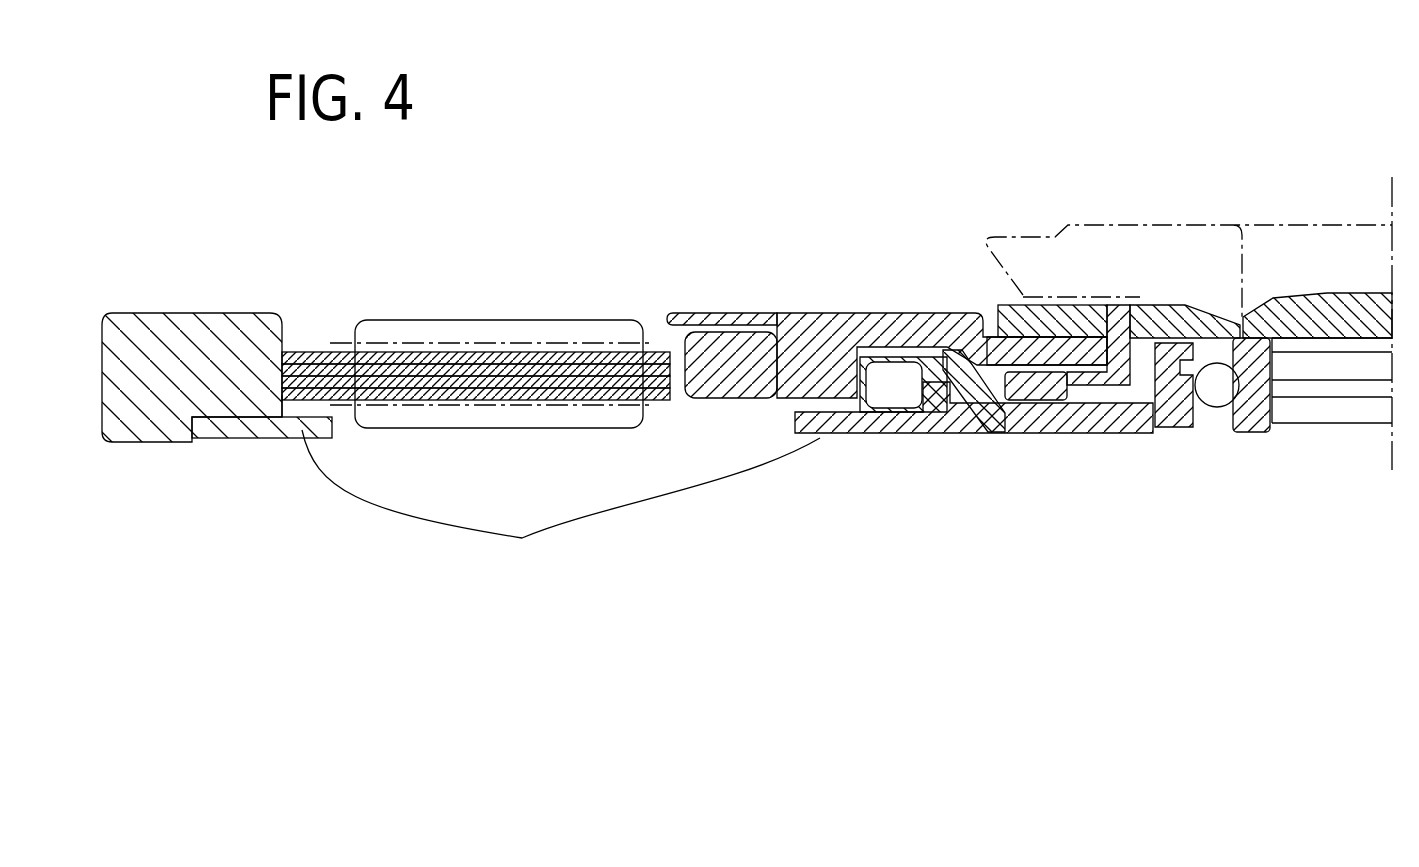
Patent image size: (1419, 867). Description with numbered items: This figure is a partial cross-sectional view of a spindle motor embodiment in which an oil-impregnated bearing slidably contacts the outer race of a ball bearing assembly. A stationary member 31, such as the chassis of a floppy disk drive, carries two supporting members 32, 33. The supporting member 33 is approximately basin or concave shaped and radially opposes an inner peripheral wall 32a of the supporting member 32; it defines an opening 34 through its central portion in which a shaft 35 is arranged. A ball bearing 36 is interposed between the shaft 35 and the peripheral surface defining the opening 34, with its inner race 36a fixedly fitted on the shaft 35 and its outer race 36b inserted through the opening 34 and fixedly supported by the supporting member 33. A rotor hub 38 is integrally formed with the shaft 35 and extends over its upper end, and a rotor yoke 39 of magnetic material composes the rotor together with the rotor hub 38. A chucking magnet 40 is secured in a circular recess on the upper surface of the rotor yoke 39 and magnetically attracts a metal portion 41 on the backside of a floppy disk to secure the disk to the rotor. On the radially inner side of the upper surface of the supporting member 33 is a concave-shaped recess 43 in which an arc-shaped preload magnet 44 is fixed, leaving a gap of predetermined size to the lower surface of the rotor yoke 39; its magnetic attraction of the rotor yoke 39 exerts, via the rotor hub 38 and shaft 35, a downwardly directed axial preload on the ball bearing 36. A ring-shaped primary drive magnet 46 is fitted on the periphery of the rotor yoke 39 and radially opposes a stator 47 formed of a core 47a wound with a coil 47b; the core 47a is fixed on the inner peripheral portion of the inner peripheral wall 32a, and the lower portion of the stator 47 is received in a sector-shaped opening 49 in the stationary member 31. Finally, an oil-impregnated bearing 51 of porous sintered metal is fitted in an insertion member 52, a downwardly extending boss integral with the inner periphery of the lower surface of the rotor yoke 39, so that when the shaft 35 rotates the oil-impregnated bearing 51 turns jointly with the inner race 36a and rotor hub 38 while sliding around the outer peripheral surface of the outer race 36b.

The stationary member 31 is at (561, 512).
The supporting member 32 is at (171, 313).
The inner peripheral wall 32a is at (298, 318).
The supporting member 33 is at (970, 427).
The opening 34 is at (1170, 427).
The shaft 35 is at (1352, 423).
The ball bearing 36 is at (1221, 353).
The inner race 36a is at (1265, 312).
The outer race 36b is at (1175, 300).
The rotor hub 38 is at (1328, 293).
The rotor yoke 39 is at (826, 313).
The chucking magnet 40 is at (1003, 303).
The metal portion 41 is at (1084, 245).
The concave-shaped recess 43 is at (960, 313).
The preload magnet 44 is at (1028, 400).
The primary drive magnet 46 is at (712, 340).
The stator 47 is at (476, 284).
The core 47a is at (415, 355).
The coil 47b is at (580, 335).
The sector-shaped opening 49 is at (332, 427).
The oil-impregnated bearing 51 is at (1120, 427).
The insertion member 52 is at (1085, 400).